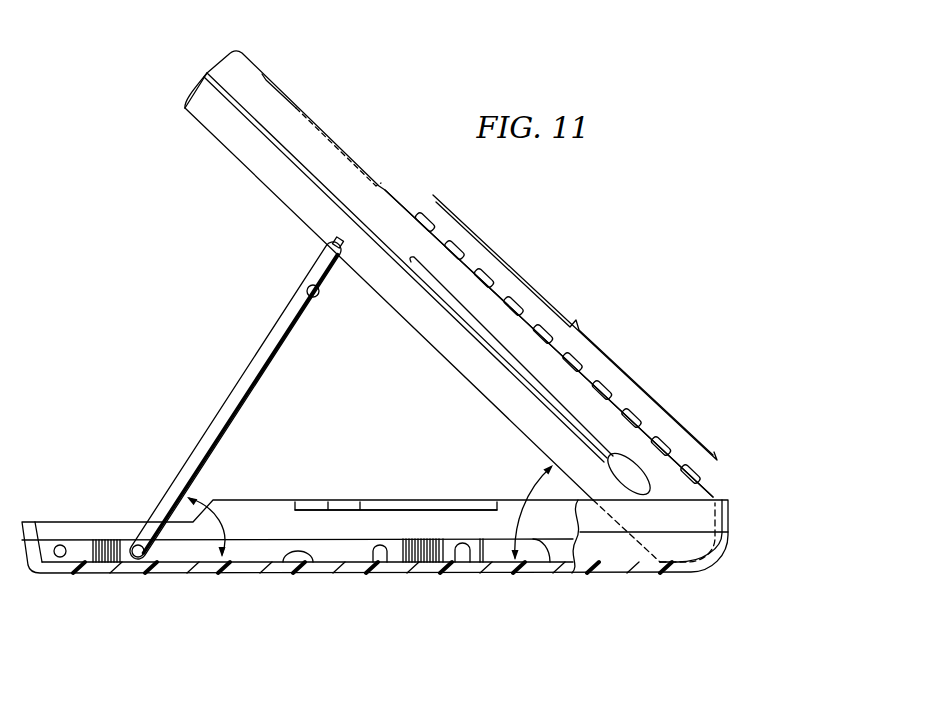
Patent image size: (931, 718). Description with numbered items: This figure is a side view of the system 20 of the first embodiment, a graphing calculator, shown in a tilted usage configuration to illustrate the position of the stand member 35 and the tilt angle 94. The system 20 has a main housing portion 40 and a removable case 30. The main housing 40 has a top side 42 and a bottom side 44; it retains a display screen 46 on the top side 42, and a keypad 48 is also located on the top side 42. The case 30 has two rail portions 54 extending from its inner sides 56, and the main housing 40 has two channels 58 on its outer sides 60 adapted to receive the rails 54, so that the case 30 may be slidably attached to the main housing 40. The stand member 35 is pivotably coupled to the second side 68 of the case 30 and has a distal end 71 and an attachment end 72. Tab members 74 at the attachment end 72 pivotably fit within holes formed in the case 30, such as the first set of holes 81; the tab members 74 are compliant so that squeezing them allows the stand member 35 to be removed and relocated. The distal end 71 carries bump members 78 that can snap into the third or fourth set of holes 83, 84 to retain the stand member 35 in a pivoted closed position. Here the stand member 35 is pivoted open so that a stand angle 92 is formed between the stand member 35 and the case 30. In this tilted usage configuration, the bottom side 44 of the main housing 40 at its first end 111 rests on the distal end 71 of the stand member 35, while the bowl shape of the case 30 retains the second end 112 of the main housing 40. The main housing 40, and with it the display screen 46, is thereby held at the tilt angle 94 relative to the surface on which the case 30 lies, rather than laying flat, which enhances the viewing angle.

The system 20 is at (572, 232).
The removable case 30 is at (613, 547).
The stand member 35 is at (244, 378).
The main housing portion 40 is at (248, 72).
The top side 42 is at (395, 190).
The bottom side 44 is at (228, 153).
The display screen 46 is at (300, 108).
The keypad 48 is at (574, 328).
The rail portions 54 is at (393, 505).
The inner sides 56 is at (272, 512).
The channels 58 is at (500, 355).
The outer sides 60 is at (275, 175).
The second side 68 is at (285, 564).
The distal end 71 is at (303, 243).
The attachment end 72 is at (136, 528).
The tab members 74 is at (168, 534).
The bump members 78 is at (313, 297).
The first set of holes 81 is at (67, 551).
The third set of holes 83 is at (367, 563).
The fourth set of holes 84 is at (469, 562).
The stand angle 92 is at (213, 508).
The tilt angle 94 is at (530, 480).
The first end 111 is at (181, 106).
The second end 112 is at (715, 492).